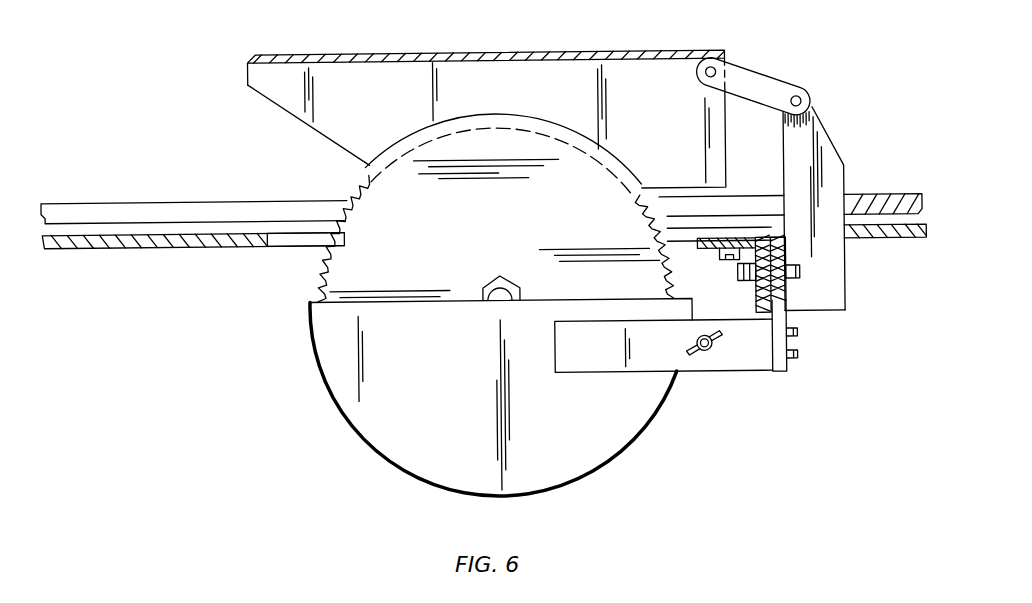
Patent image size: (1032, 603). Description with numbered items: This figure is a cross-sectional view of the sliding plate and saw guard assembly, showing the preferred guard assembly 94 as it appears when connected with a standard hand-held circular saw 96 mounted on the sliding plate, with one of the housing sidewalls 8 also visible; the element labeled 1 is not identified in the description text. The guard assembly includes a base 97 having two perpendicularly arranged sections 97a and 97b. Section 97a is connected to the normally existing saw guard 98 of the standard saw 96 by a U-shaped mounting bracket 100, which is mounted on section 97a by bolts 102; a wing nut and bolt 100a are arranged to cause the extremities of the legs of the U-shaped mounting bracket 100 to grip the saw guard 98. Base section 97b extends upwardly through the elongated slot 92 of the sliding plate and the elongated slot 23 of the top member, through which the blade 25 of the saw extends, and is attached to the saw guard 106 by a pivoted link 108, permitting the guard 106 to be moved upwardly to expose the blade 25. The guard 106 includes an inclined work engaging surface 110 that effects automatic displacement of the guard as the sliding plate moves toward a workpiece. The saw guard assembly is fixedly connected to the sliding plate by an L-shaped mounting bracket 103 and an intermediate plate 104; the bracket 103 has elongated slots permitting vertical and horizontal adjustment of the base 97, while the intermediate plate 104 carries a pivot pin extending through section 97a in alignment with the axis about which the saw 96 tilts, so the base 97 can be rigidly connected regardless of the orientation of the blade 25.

The table plate 1 is at (578, 52).
The saw guard 106 is at (402, 55).
The inclined work engaging surface 110 is at (272, 103).
The guard assembly 94 is at (800, 58).
The pivoted link 108 is at (743, 75).
The base 97 is at (848, 172).
The base section 97b is at (823, 138).
The base section 97a is at (780, 260).
The L-shaped mounting bracket 103 is at (712, 252).
The intermediate plate 104 is at (758, 283).
The elongated slot 23 is at (282, 205).
The sidewall 8 is at (241, 248).
The elongated slot 92 is at (300, 240).
The blade 25 is at (512, 226).
The hand-held circular saw 96 is at (355, 432).
The saw guard 98 is at (610, 443).
The U-shaped mounting bracket 100 is at (742, 372).
The wing nut and bolt 100a is at (703, 353).
The bolts 102 is at (800, 331).